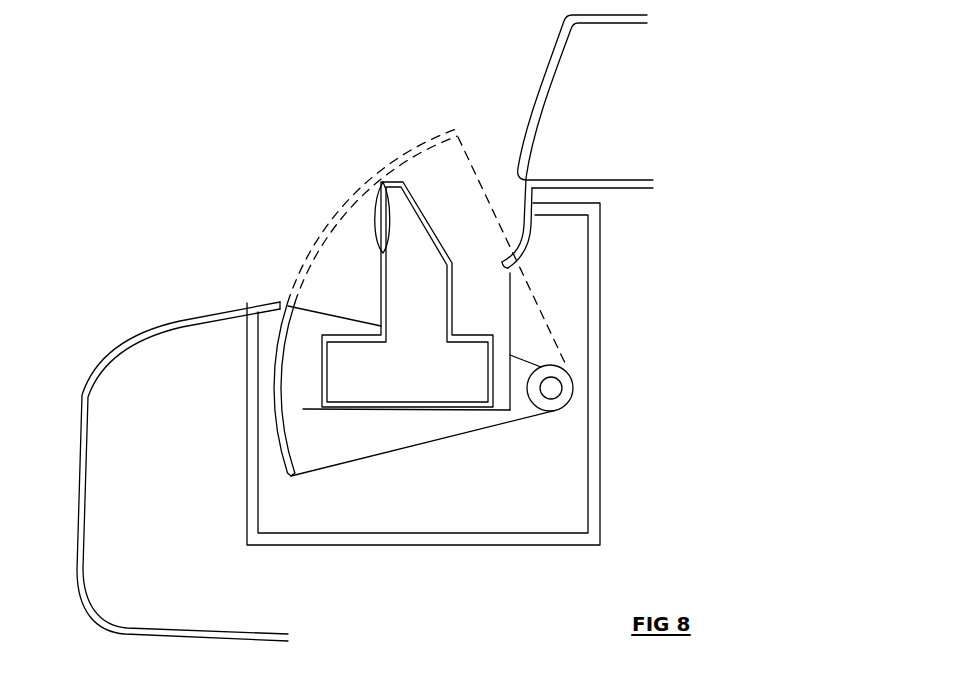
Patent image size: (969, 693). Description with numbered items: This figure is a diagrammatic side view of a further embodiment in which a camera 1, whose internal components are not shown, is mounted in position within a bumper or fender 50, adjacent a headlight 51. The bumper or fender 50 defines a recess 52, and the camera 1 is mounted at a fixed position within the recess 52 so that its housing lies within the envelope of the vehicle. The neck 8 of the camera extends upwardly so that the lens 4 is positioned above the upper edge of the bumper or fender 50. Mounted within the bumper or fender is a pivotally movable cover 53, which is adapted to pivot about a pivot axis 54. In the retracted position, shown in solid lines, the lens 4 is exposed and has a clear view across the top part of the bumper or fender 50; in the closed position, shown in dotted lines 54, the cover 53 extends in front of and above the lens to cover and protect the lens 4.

The camera 1 is at (505, 307).
The lens 4 is at (374, 217).
The neck 8 is at (440, 292).
The bumper or fender 50 is at (133, 333).
The headlight 51 is at (530, 90).
The recess 52 is at (600, 332).
The pivotally movable cover 53 is at (392, 455).
The pivot axis 54 is at (557, 388).